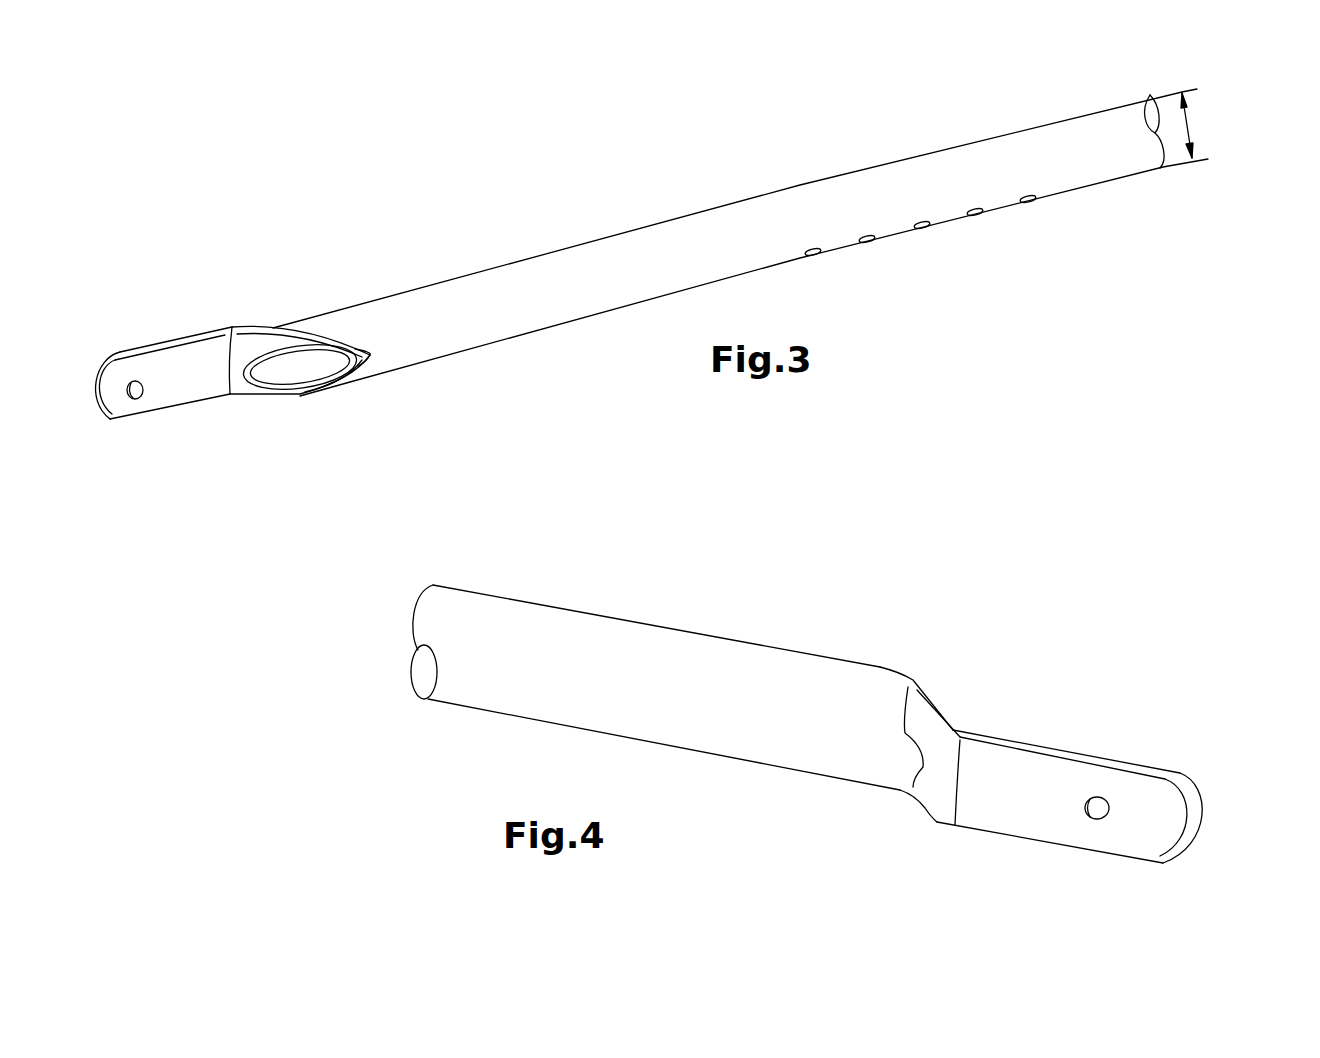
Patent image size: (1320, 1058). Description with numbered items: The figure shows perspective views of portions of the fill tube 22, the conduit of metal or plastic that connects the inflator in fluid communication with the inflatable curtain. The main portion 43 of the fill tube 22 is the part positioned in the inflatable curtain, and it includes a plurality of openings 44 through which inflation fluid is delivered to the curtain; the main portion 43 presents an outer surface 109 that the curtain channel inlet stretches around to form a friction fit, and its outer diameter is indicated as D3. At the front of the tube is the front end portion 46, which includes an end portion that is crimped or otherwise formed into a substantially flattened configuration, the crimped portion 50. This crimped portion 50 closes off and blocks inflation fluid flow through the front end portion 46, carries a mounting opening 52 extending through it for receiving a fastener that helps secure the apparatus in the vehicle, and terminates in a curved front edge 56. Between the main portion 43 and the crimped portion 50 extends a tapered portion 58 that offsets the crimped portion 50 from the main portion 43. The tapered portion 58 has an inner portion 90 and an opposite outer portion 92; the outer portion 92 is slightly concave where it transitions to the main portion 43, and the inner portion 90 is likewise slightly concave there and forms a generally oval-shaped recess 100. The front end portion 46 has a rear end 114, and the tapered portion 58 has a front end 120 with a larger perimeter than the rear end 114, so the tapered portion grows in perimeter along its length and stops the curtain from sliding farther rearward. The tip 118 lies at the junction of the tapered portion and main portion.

In FIG. 3, the fill tube 22 is at (750, 226).
In FIG. 4, the fill tube 22 is at (655, 653).
In FIG. 3, the main portion 43 is at (750, 226).
In FIG. 4, the main portion 43 is at (570, 637).
In FIG. 3, the openings 44 is at (812, 256).
In FIG. 3, the front end portion 46 is at (279, 401).
In FIG. 4, the front end portion 46 is at (1047, 766).
In FIG. 3, the crimped portion 50 is at (183, 388).
In FIG. 4, the crimped portion 50 is at (1018, 800).
In FIG. 3, the mounting opening 52 is at (132, 386).
In FIG. 4, the mounting opening 52 is at (1097, 817).
In FIG. 3, the curved front edge 56 is at (95, 400).
In FIG. 4, the curved front edge 56 is at (1200, 815).
In FIG. 3, the tapered portion 58 is at (272, 400).
In FIG. 4, the tapered portion 58 is at (948, 705).
In FIG. 3, the inner portion 90 is at (251, 392).
In FIG. 4, the outer portion 92 is at (938, 800).
In FIG. 3, the oval-shaped recess 100 is at (323, 363).
In FIG. 3, the outer surface 109 is at (1020, 128).
In FIG. 3, the rear end 114 is at (225, 335).
In FIG. 3, the tip 118 is at (360, 356).
In FIG. 3, the front end 120 is at (234, 328).
In FIG. 3, the diameter D3 is at (1204, 125).